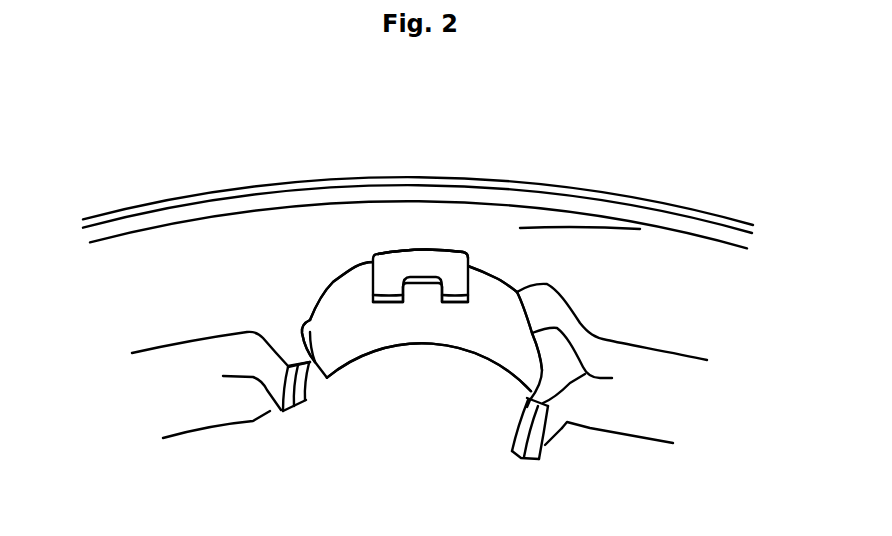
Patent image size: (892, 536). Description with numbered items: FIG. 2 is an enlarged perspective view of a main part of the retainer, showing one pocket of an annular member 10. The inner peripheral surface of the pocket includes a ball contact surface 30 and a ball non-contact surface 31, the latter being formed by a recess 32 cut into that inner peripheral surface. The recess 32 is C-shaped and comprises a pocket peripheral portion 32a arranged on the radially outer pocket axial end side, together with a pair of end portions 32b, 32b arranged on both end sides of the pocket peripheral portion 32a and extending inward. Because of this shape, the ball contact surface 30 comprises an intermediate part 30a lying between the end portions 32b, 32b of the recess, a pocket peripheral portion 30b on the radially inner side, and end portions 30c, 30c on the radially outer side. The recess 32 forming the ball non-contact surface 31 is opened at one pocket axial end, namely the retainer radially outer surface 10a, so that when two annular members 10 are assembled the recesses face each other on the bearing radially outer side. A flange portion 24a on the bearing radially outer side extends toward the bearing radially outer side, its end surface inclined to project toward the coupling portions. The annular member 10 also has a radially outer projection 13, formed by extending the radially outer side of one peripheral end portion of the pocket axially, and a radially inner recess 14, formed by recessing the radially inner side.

The annular member 10 is at (659, 189).
The retainer radially outer surface 10a is at (688, 262).
The radially outer projection 13 is at (281, 412).
The radially inner recess 14 is at (314, 380).
The flange portion 24a is at (582, 205).
The ball contact surface 30 is at (420, 315).
The intermediate part 30a is at (407, 293).
The pocket peripheral portion 30b is at (503, 340).
The end portion 30c is at (337, 300).
The ball non-contact surface 31 is at (447, 263).
The recess 32 is at (430, 252).
The pocket peripheral portion 32a is at (410, 254).
The end portion 32b is at (381, 287).